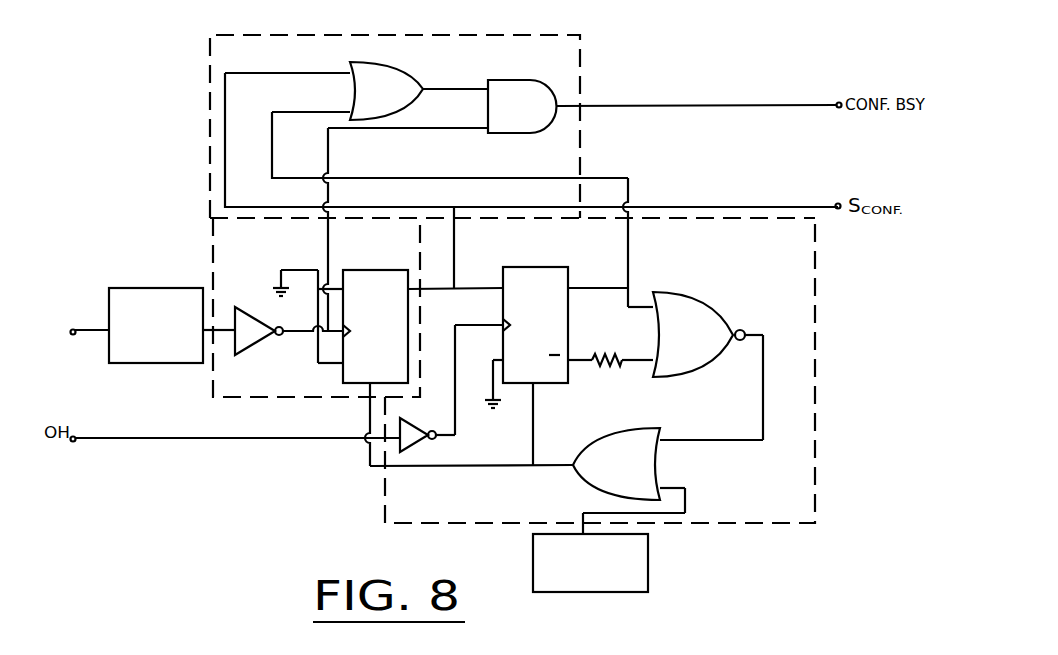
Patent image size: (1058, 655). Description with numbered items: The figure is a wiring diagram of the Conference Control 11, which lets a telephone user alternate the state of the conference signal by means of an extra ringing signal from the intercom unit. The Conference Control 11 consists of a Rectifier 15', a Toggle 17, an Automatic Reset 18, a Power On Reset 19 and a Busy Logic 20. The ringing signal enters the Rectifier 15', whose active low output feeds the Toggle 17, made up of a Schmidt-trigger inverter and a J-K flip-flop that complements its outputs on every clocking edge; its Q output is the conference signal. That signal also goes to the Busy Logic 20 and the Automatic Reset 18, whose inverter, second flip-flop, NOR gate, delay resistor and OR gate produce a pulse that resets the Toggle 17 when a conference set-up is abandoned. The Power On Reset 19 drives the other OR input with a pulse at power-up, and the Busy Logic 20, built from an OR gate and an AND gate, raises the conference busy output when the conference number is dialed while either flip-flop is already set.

The Busy Logic 20 is at (492, 43).
The Toggle 17 is at (225, 250).
The Automatic Reset 18 is at (800, 343).
The Power On Reset 19 is at (650, 571).
The Rectifier 15' is at (138, 307).
The Conference Control 11 is at (280, 452).